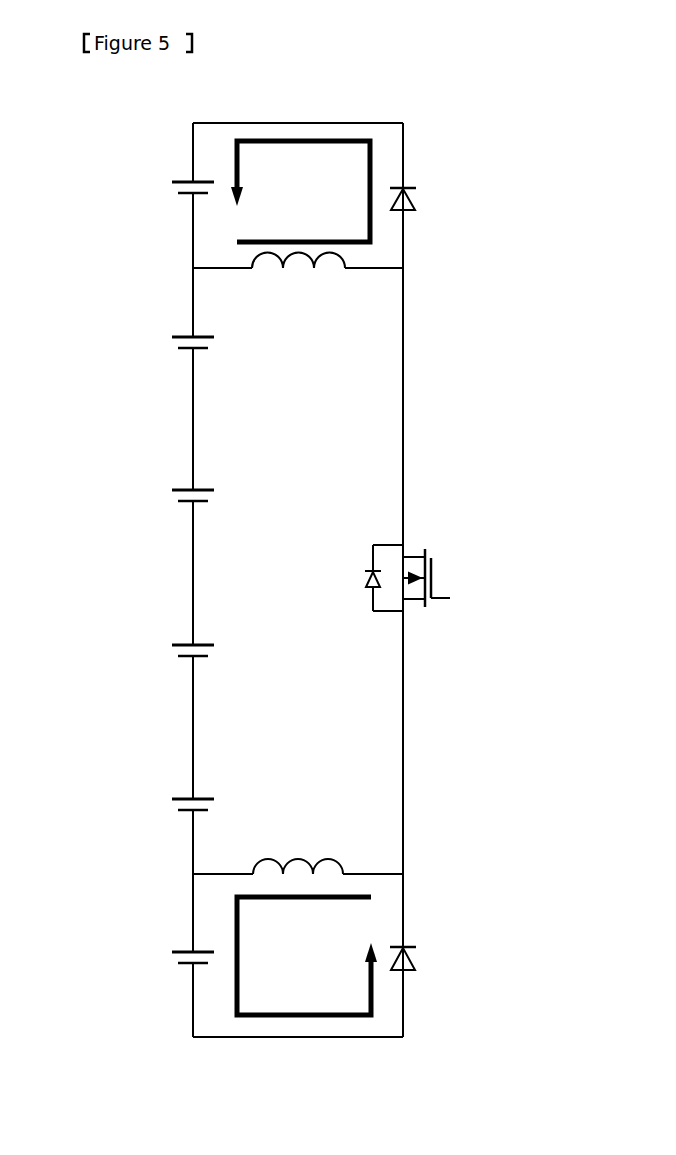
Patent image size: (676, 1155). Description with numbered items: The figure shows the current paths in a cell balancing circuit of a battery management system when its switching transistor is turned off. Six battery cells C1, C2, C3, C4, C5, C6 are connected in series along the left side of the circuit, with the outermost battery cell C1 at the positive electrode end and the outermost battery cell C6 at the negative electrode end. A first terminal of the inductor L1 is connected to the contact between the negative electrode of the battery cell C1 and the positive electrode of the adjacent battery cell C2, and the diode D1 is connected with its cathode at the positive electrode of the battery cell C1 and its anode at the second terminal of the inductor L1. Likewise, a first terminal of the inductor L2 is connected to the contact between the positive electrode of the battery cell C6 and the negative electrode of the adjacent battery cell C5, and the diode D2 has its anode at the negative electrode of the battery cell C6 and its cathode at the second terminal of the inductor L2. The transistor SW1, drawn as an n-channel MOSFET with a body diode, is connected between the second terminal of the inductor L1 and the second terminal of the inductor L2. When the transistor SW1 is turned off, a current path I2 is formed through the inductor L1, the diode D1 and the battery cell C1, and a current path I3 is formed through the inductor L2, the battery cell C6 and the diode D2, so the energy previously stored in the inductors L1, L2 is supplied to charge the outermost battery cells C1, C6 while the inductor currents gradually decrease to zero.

The outermost battery cell in the positive electrode direction C1 is at (179, 180).
The battery cell adjacent to the outermost battery cell C1 C2 is at (179, 335).
The battery cell C3 is at (179, 488).
The battery cell C4 is at (179, 643).
The battery cell adjacent to the outermost battery cell C6 C5 is at (179, 797).
The outermost battery cell in the negative electrode direction C6 is at (179, 950).
The inductor L1 is at (296, 278).
The inductor L2 is at (300, 862).
The diode D1 is at (417, 205).
The diode D2 is at (417, 962).
The transistor SW1 is at (433, 566).
The current path I2 is at (240, 165).
The current path I3 is at (240, 940).